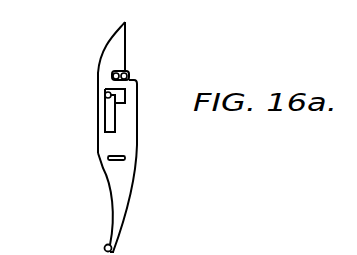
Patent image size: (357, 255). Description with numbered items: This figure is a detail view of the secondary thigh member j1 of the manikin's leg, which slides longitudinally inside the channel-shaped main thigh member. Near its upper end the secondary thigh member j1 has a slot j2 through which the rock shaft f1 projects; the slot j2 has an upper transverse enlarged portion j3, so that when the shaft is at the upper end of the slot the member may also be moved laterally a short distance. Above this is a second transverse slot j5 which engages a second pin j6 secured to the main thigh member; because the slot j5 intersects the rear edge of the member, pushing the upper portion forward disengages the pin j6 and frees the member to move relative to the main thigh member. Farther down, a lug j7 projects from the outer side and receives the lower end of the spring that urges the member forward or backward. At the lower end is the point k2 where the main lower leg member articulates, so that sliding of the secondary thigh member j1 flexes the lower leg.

The second transverse slot j5 is at (113, 74).
The second pin j6 is at (128, 74).
The rock shaft f1 is at (107, 93).
The upper transverse enlarged portion j3 is at (123, 91).
The slot j2 is at (112, 118).
The secondary thigh member j1 is at (173, 113).
The lug j7 is at (125, 158).
The point of articulation k2 is at (104, 250).